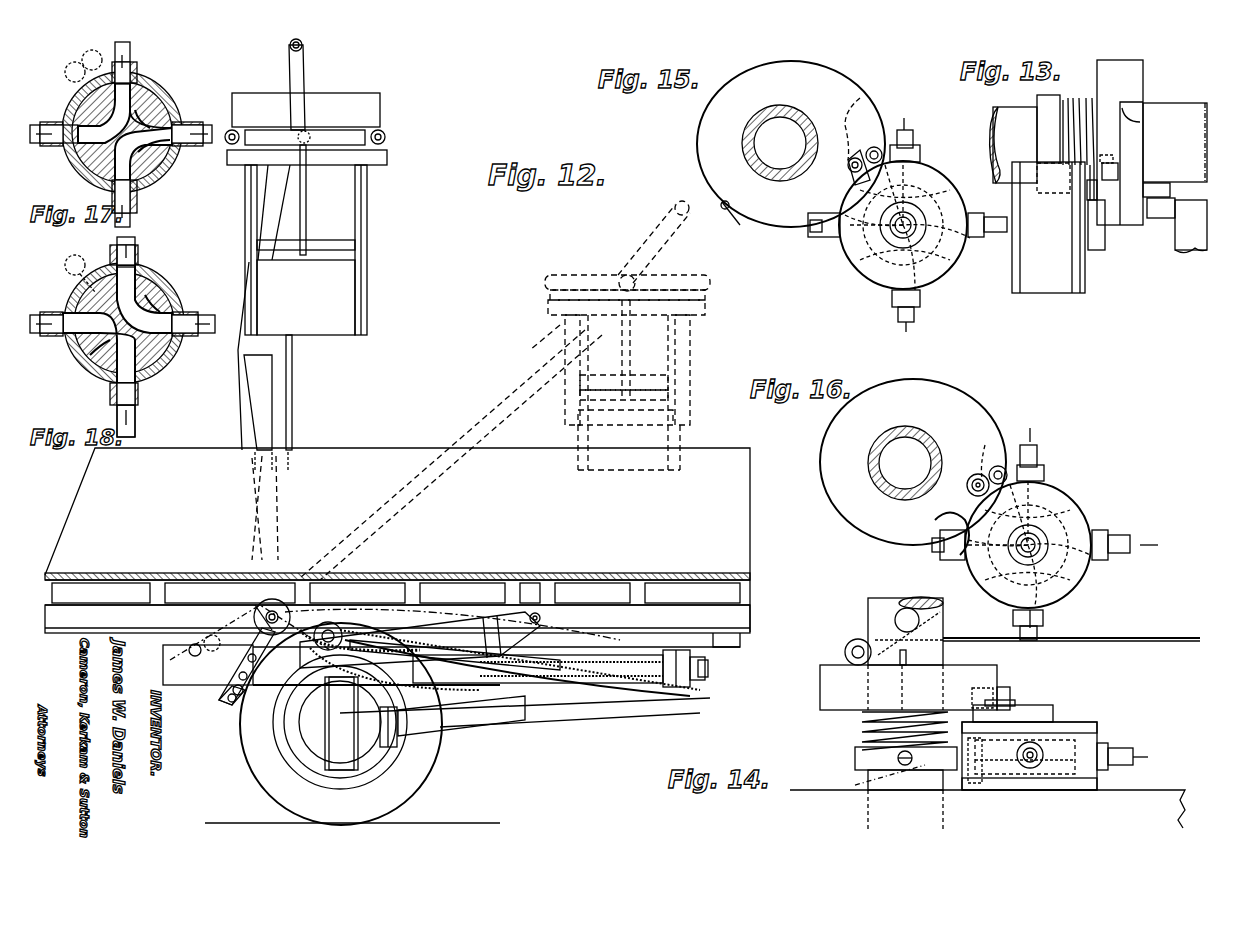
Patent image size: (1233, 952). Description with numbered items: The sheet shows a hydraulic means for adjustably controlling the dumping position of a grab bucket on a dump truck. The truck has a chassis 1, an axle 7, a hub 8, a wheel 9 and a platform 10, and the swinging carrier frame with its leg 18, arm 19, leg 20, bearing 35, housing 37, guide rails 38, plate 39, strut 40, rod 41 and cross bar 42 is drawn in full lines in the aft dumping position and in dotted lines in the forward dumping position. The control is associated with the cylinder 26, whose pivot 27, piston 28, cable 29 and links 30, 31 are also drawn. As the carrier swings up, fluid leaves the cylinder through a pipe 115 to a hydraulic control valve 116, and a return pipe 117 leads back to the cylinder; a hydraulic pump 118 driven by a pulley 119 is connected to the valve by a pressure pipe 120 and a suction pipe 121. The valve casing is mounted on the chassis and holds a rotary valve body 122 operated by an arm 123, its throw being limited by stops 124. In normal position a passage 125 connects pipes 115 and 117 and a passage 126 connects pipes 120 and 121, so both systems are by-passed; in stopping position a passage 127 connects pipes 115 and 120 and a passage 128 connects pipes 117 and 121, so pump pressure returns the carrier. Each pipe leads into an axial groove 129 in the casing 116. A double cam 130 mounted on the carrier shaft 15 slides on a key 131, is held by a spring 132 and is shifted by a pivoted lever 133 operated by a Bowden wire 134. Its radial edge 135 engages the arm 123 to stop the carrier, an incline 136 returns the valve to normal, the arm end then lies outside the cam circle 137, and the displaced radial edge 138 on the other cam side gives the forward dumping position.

In FIG. 12, the chassis 1 is at (163, 650).
In FIG. 12, the axle 7 is at (488, 712).
In FIG. 12, the hub 8 is at (340, 722).
In FIG. 12, the wheel 9 is at (425, 750).
In FIG. 12, the platform 10 is at (348, 468).
In FIG. 12, the carrier shaft 15 is at (262, 605).
In FIG. 15, the carrier shaft 15 is at (745, 138).
In FIG. 13, the carrier shaft 15 is at (1000, 115).
In FIG. 16, the carrier shaft 15 is at (870, 462).
In FIG. 14, the carrier shaft 15 is at (870, 615).
In FIG. 12, the mast leg 18 is at (290, 428).
In FIG. 12, the arm 19 is at (303, 62).
In FIG. 12, the leg 20 is at (242, 430).
In FIG. 12, the cylinder 26 is at (445, 640).
In FIG. 12, the pivot 27 is at (551, 616).
In FIG. 12, the piston 28 is at (405, 640).
In FIG. 12, the cable 29 is at (360, 630).
In FIG. 12, the link 30 is at (219, 695).
In FIG. 12, the arm 31 is at (250, 655).
In FIG. 12, the bearing 35 is at (386, 133).
In FIG. 12, the housing 37 is at (357, 305).
In FIG. 12, the guide rail 38 is at (245, 195).
In FIG. 12, the plate 39 is at (388, 158).
In FIG. 12, the strut 40 is at (290, 210).
In FIG. 12, the rod 41 is at (307, 172).
In FIG. 12, the cross bar 42 is at (312, 240).
In FIG. 17, the pipe 115 is at (55, 120).
In FIG. 12, the pipe 115 is at (410, 660).
In FIG. 15, the pipe 115 is at (810, 233).
In FIG. 16, the pipe 115 is at (932, 553).
In FIG. 14, the pipe 115 is at (872, 779).
In FIG. 17, the hydraulic control valve 116 is at (140, 90).
In FIG. 18, the hydraulic control valve 116 is at (140, 290).
In FIG. 12, the hydraulic control valve 116 is at (330, 622).
In FIG. 15, the hydraulic control valve 116 is at (855, 272).
In FIG. 13, the hydraulic control valve 116 is at (1065, 268).
In FIG. 16, the hydraulic control valve 116 is at (1078, 510).
In FIG. 14, the hydraulic control valve 116 is at (1070, 725).
In FIG. 17, the return pipe 117 is at (136, 56).
In FIG. 12, the return pipe 117 is at (395, 676).
In FIG. 15, the return pipe 117 is at (918, 130).
In FIG. 16, the return pipe 117 is at (1038, 455).
In FIG. 14, the return pipe 117 is at (1037, 745).
In FIG. 12, the hydraulic pump 118 is at (672, 688).
In FIG. 12, the pulley 119 is at (706, 678).
In FIG. 17, the pipe 120 is at (136, 210).
In FIG. 18, the pipe 120 is at (136, 422).
In FIG. 12, the pipe 120 is at (585, 692).
In FIG. 15, the pipe 120 is at (892, 300).
In FIG. 16, the pipe 120 is at (1044, 612).
In FIG. 17, the pipe 121 is at (190, 120).
In FIG. 12, the pipe 121 is at (618, 700).
In FIG. 15, the pipe 121 is at (992, 240).
In FIG. 16, the pipe 121 is at (1125, 537).
In FIG. 14, the pipe 121 is at (1118, 750).
In FIG. 17, the rotary valve body 122 is at (152, 104).
In FIG. 18, the rotary valve body 122 is at (152, 300).
In FIG. 15, the arm 123 is at (920, 152).
In FIG. 13, the arm 123 is at (1105, 220).
In FIG. 16, the arm 123 is at (1044, 472).
In FIG. 14, the arm 123 is at (1000, 712).
In FIG. 15, the stops 124 is at (912, 180).
In FIG. 13, the stops 124 is at (1098, 255).
In FIG. 16, the stops 124 is at (1040, 500).
In FIG. 17, the passage 125 is at (68, 78).
In FIG. 17, the passage 126 is at (165, 150).
In FIG. 18, the passage 127 is at (80, 358).
In FIG. 18, the passage 128 is at (142, 262).
In FIG. 18, the axial groove 129 is at (136, 250).
In FIG. 14, the axial groove 129 is at (1100, 742).
In FIG. 12, the double cam 130 is at (258, 614).
In FIG. 13, the double cam 130 is at (1130, 82).
In FIG. 14, the double cam 130 is at (840, 695).
In FIG. 14, the key 131 is at (908, 660).
In FIG. 13, the spring 132 is at (1085, 102).
In FIG. 14, the spring 132 is at (862, 720).
In FIG. 13, the pivoted lever 133 is at (1155, 190).
In FIG. 14, the pivoted lever 133 is at (835, 647).
In FIG. 14, the Bowden wire 134 is at (1100, 640).
In FIG. 15, the radial edge 135 is at (862, 148).
In FIG. 13, the radial edge 135 is at (1112, 210).
In FIG. 16, the radial edge 135 is at (968, 492).
In FIG. 15, the incline 136 is at (850, 178).
In FIG. 16, the incline 136 is at (940, 528).
In FIG. 15, the cam circle 137 is at (721, 218).
In FIG. 16, the cam circle 137 is at (850, 518).
In FIG. 15, the radial edge 138 is at (862, 98).
In FIG. 13, the radial edge 138 is at (1140, 122).
In FIG. 16, the radial edge 138 is at (981, 463).